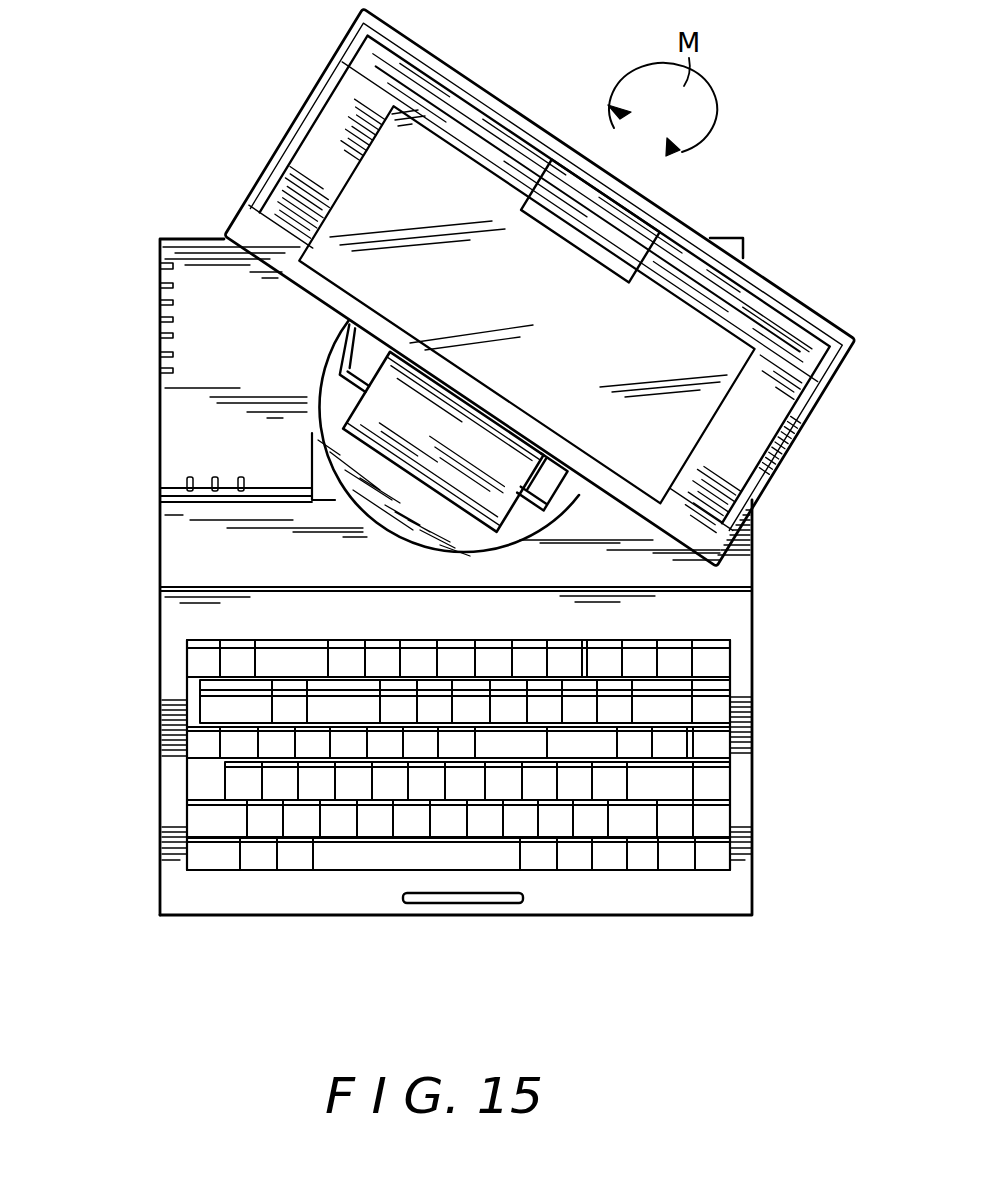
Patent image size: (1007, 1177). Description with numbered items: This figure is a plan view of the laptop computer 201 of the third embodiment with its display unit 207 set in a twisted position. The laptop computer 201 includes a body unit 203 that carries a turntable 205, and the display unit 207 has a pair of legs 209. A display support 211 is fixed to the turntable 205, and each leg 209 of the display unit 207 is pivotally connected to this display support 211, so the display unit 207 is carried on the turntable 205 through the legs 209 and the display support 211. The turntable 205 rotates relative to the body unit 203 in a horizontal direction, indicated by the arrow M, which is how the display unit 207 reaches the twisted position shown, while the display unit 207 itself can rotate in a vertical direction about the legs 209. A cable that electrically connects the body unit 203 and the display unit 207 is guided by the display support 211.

The laptop computer 201 is at (150, 772).
The body unit 203 is at (757, 875).
The turntable 205 is at (391, 529).
The display unit 207 is at (813, 305).
The legs 209 is at (364, 354).
The display support 211 is at (465, 457).